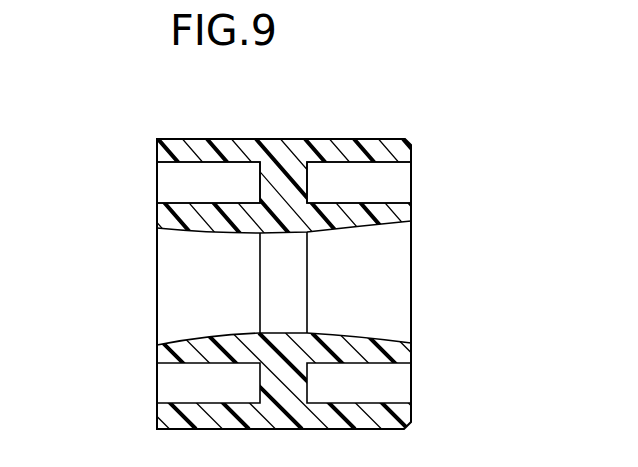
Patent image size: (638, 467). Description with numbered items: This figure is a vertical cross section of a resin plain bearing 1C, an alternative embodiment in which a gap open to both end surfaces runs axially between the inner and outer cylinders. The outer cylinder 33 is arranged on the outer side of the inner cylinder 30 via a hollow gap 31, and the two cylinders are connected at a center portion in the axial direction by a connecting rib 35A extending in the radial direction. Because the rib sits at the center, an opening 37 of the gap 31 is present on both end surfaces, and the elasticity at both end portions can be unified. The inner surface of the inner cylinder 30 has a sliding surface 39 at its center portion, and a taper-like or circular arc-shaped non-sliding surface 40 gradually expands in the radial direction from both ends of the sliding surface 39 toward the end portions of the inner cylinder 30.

The plain bearing 1C is at (420, 152).
The inner cylinder 30 is at (377, 231).
The hollow gap 31 is at (228, 183).
The outer cylinder 33 is at (378, 145).
The connecting rib 35A is at (297, 387).
The opening 37 is at (180, 183).
The sliding surface 39 is at (283, 332).
The non-sliding surface 40 is at (213, 338).